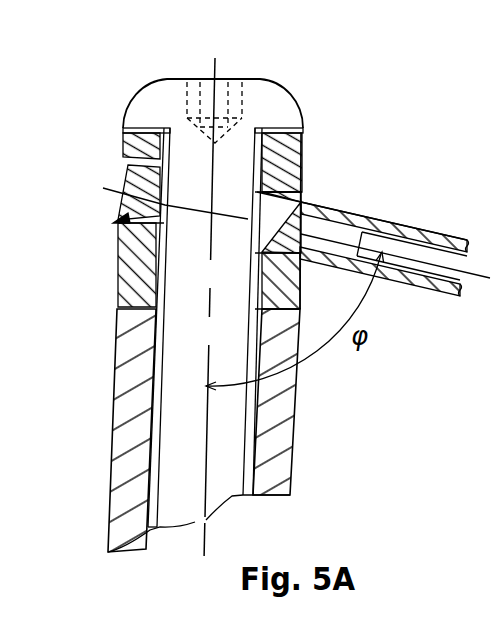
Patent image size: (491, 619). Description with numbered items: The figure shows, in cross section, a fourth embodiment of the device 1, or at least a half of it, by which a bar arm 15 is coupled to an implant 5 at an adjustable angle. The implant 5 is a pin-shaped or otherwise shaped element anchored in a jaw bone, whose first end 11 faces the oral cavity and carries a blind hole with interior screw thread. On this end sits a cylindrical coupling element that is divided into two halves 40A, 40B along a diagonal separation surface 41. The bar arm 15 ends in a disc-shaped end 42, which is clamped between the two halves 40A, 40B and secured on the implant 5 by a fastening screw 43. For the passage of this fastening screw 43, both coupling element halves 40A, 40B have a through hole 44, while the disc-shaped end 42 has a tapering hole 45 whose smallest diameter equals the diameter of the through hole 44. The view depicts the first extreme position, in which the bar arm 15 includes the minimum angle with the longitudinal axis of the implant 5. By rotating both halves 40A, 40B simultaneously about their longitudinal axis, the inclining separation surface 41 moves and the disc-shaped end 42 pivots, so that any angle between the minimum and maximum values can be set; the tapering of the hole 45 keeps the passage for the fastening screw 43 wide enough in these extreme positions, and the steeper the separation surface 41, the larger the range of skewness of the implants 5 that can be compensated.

The device 1 is at (367, 75).
The fastening screw 43 is at (273, 103).
The first end 11 is at (110, 342).
The coupling element half 40B is at (132, 143).
The disc-shaped end 42 is at (128, 168).
The diagonal separation surface 41 is at (122, 214).
The coupling element half 40A is at (118, 263).
The through hole 44 is at (303, 146).
The tapering hole 45 is at (303, 183).
The bar arm 15 is at (383, 220).
The implant 5 is at (279, 421).